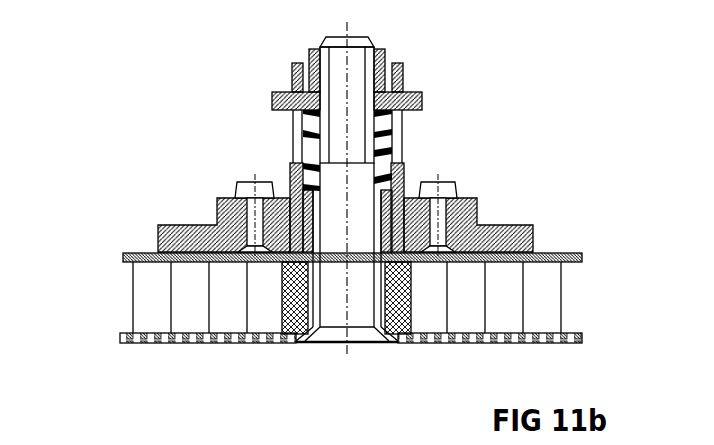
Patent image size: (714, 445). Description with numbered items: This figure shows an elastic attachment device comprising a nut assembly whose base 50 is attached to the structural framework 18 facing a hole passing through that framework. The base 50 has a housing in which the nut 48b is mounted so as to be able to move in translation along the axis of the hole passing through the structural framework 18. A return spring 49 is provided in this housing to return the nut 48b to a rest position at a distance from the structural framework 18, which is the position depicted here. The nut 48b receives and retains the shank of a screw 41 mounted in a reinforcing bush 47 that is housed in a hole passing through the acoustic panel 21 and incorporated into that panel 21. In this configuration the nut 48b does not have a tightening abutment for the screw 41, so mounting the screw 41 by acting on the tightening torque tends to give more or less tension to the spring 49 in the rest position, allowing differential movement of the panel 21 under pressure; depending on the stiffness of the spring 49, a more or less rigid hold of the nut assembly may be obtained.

The structural framework 18 is at (143, 210).
The acoustic panel 21 is at (150, 307).
The screw 41 is at (360, 343).
The reinforcing bush 47 is at (290, 293).
The nut 48b is at (273, 90).
The return spring 49 is at (293, 140).
The base 50 is at (405, 62).